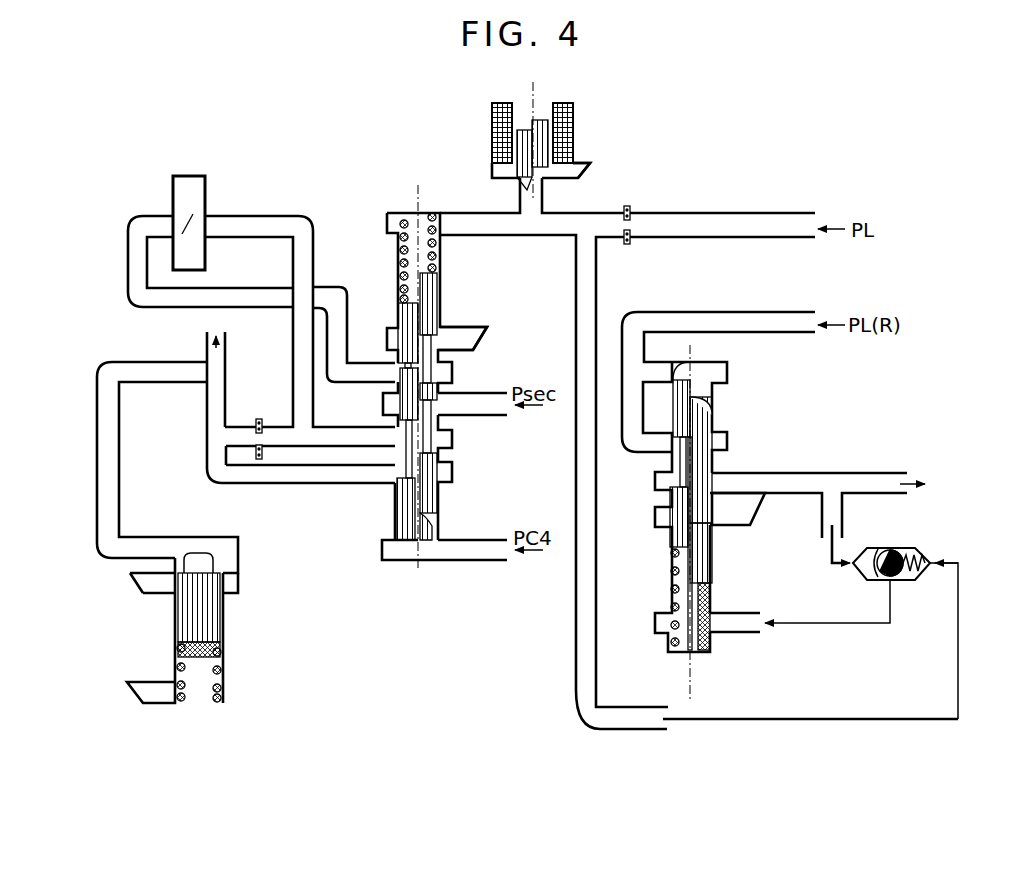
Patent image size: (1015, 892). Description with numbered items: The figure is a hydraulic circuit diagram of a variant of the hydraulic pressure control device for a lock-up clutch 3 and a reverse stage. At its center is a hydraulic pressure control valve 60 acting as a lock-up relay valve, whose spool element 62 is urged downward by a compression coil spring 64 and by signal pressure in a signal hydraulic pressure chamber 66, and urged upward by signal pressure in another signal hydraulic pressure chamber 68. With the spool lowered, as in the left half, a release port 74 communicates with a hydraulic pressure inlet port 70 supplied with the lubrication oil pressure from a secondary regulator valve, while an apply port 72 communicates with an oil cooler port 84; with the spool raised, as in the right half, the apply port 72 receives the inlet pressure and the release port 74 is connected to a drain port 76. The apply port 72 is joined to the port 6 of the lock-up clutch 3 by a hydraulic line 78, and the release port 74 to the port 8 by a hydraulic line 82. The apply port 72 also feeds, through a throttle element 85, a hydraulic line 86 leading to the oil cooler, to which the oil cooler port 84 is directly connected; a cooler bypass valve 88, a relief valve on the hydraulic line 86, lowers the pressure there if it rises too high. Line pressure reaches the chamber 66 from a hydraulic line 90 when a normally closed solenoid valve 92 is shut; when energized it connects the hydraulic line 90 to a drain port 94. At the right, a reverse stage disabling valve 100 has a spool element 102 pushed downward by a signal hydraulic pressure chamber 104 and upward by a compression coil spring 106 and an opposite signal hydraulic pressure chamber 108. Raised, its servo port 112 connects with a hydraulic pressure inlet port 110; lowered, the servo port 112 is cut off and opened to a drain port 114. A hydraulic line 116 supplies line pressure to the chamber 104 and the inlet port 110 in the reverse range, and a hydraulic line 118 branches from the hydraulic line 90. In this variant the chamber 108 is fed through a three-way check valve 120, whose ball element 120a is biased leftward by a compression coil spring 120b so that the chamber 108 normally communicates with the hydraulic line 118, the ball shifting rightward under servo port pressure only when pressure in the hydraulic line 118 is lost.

The lock-up clutch 3 is at (205, 196).
The port for the lock-up clutch 6 is at (210, 228).
The port for the lock-up clutch 8 is at (168, 224).
The hydraulic pressure control valve 60 is at (410, 211).
The spool element 62 is at (420, 374).
The compression coil spring 64 is at (440, 255).
The signal hydraulic pressure chamber 66 is at (399, 249).
The signal hydraulic pressure chamber 68 is at (428, 532).
The hydraulic pressure inlet port 70 is at (442, 405).
The apply port 72 is at (390, 438).
The release port 74 is at (390, 372).
The drain port 76 is at (462, 338).
The hydraulic line 78 is at (302, 352).
The hydraulic line 82 is at (246, 298).
The oil cooler port 84 is at (372, 478).
The throttle element 85 is at (259, 418).
The hydraulic line 86 is at (213, 405).
The cooler bypass valve 88 is at (226, 600).
The hydraulic line 90 is at (518, 237).
The solenoid valve 92 is at (578, 140).
The drain port 94 is at (588, 176).
The reverse stage disabling valve 100 is at (713, 411).
The spool element 102 is at (706, 470).
The signal hydraulic pressure chamber 104 is at (717, 373).
The compression coil spring 106 is at (705, 598).
The signal hydraulic pressure chamber 108 is at (680, 632).
The hydraulic pressure inlet port 110 is at (640, 445).
The servo port 112 is at (722, 480).
The drain port 114 is at (731, 519).
The hydraulic line 116 is at (712, 318).
The hydraulic line 118 is at (597, 555).
The three-way check valve 120 is at (912, 548).
The ball element 120a is at (885, 553).
The compression coil spring 120b is at (925, 555).